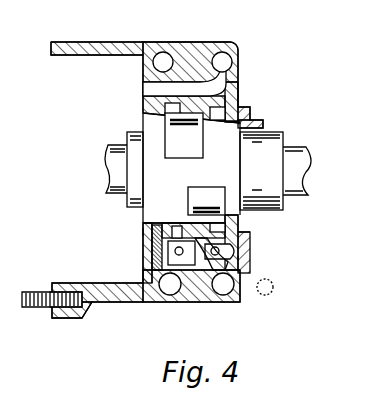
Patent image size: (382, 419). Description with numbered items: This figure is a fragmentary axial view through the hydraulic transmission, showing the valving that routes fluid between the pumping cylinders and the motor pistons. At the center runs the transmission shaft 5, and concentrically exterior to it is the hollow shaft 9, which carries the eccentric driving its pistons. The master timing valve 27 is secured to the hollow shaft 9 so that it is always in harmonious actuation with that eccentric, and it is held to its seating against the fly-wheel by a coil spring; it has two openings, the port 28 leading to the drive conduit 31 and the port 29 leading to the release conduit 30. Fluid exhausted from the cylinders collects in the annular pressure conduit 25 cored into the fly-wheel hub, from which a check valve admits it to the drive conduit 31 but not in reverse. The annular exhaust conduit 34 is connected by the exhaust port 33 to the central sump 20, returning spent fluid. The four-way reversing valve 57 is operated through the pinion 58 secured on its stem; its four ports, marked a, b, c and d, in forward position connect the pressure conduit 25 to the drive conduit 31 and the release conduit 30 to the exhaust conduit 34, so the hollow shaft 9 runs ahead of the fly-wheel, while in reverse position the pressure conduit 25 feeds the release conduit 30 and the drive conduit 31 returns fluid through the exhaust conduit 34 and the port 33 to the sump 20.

The transmission shaft 5 is at (292, 165).
The hollow shaft 9 is at (261, 171).
The central sump 20 is at (143, 252).
The pressure conduit 25 is at (163, 52).
The master timing valve 27 is at (191, 173).
The valve port 28 is at (184, 136).
The valve port 29 is at (206, 200).
The release conduit 30 is at (220, 112).
The drive conduit 31 is at (160, 109).
The exhaust port 33 is at (150, 88).
The annular exhaust conduit 34 is at (217, 54).
The four-way reversing valve 57 is at (232, 249).
The pinion 58 is at (250, 259).
The position a is at (127, 233).
The position b is at (252, 257).
The pawl strip c is at (205, 270).
The position d is at (205, 248).